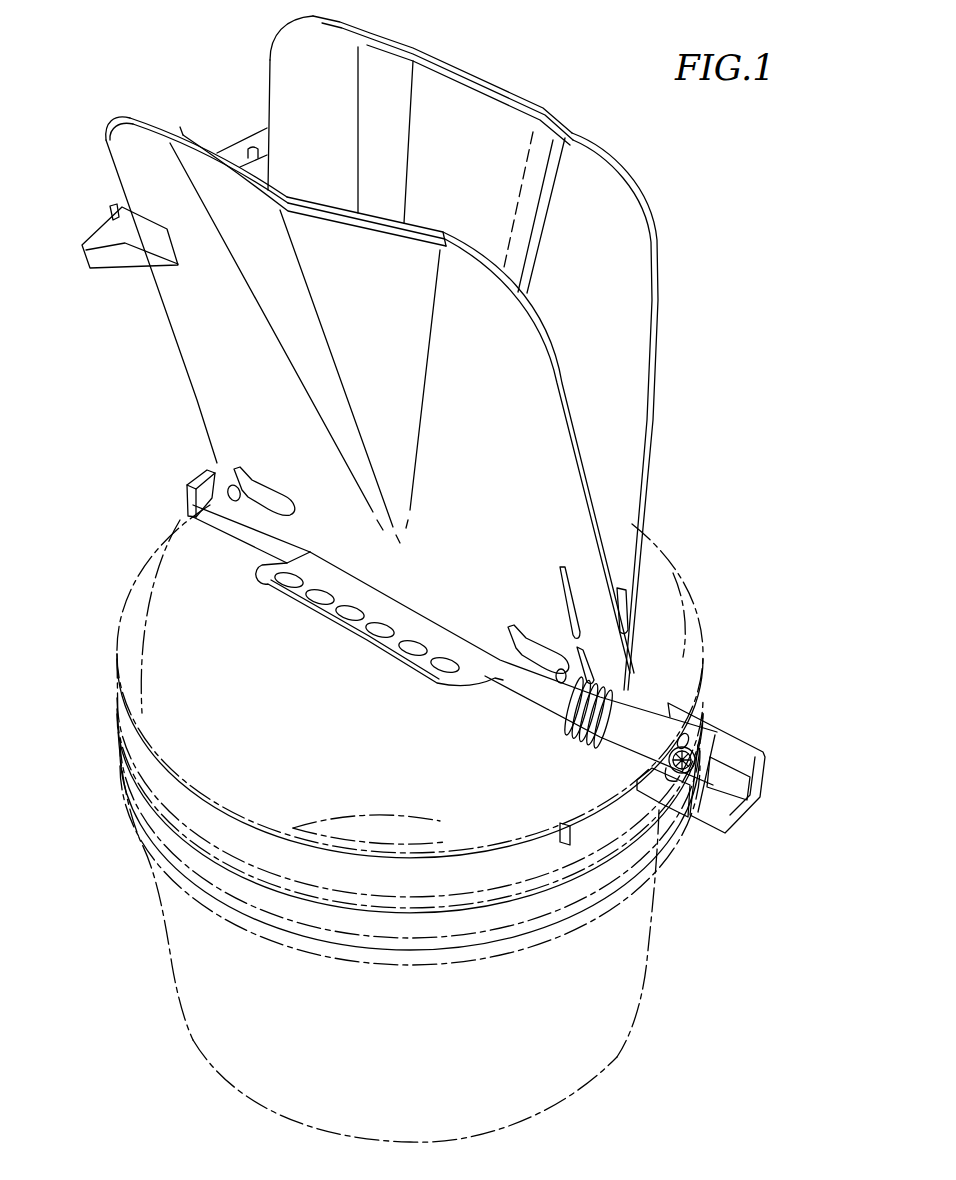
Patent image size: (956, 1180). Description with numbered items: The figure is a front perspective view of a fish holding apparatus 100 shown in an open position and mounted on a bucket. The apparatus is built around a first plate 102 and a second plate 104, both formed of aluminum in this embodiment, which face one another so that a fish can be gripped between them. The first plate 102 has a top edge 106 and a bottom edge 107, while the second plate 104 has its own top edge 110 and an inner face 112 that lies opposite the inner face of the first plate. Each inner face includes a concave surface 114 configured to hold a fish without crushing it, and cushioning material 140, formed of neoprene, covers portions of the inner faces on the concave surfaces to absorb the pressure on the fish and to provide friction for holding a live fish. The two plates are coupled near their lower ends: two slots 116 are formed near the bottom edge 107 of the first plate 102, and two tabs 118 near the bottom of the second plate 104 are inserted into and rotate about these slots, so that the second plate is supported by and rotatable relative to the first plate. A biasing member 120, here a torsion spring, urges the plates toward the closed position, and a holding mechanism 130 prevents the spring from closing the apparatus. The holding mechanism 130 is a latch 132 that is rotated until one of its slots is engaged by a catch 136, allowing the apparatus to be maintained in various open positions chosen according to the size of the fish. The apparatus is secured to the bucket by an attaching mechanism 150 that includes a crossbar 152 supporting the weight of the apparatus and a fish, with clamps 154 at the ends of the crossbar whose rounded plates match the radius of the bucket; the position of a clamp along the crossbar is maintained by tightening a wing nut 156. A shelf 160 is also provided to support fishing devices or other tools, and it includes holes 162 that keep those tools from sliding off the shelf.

The fish holding apparatus 100 is at (678, 142).
The first plate 102 is at (207, 403).
The second plate 104 is at (285, 50).
The top edge 106 is at (147, 113).
The bottom edge 107 is at (247, 523).
The top edge 110 is at (335, 21).
The inner face 112 is at (620, 252).
The concave surface 114 is at (307, 313).
The slots 116 is at (230, 472).
The tabs 118 is at (193, 528).
The biasing member 120 is at (600, 705).
The holding mechanism 130 is at (106, 264).
The latch 132 is at (82, 248).
The catch 136 is at (153, 247).
The cushioning material 140 is at (193, 130).
The attaching mechanism 150 is at (738, 779).
The crossbar 152 is at (675, 722).
The clamps 154 is at (193, 478).
The wing nut 156 is at (685, 748).
The shelf 160 is at (276, 630).
The holes 162 is at (425, 650).